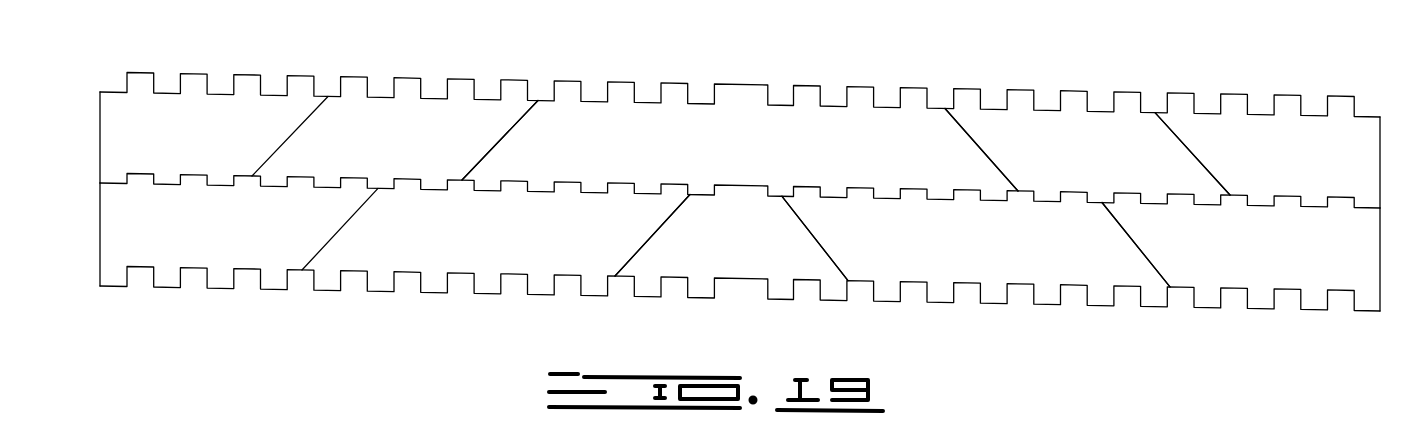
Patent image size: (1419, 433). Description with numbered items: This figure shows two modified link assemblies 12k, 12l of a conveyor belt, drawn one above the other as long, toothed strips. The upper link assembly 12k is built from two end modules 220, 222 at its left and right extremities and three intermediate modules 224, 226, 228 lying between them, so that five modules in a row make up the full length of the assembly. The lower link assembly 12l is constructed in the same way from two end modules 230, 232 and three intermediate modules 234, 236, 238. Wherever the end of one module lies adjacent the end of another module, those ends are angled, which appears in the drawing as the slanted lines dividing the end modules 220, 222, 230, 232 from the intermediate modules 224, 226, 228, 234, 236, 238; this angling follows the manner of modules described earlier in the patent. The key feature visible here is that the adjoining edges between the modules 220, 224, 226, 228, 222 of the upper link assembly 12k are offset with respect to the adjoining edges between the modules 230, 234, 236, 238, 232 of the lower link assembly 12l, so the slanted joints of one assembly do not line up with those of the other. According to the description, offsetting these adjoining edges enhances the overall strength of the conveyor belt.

The link assembly 12k is at (99, 133).
The link assembly 12l is at (98, 224).
The end module 220 is at (170, 110).
The intermediate module 224 is at (437, 117).
The intermediate module 226 is at (703, 130).
The intermediate module 228 is at (1052, 128).
The end module 222 is at (1258, 132).
The end module 230 is at (247, 253).
The intermediate module 234 is at (465, 257).
The intermediate module 236 is at (743, 258).
The intermediate module 238 is at (972, 263).
The end module 232 is at (1225, 265).